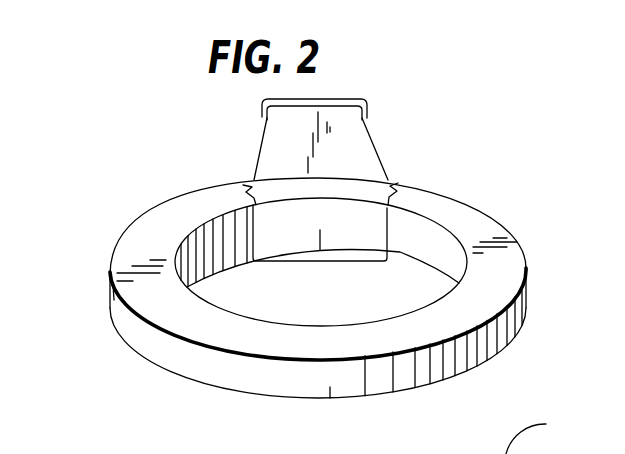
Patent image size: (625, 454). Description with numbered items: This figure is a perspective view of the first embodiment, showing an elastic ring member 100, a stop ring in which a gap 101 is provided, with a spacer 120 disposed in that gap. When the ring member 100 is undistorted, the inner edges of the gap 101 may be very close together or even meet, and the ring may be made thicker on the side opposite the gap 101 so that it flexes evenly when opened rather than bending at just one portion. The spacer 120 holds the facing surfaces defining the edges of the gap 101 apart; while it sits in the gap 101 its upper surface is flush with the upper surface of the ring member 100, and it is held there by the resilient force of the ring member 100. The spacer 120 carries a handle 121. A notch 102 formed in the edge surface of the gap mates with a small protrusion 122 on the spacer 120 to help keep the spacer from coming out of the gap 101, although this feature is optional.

The elastic ring member 100 is at (134, 357).
The gap 101 is at (343, 236).
The notch 102 is at (243, 186).
The spacer 120 is at (326, 132).
The handle 121 is at (282, 150).
The protrusion 122 is at (398, 183).